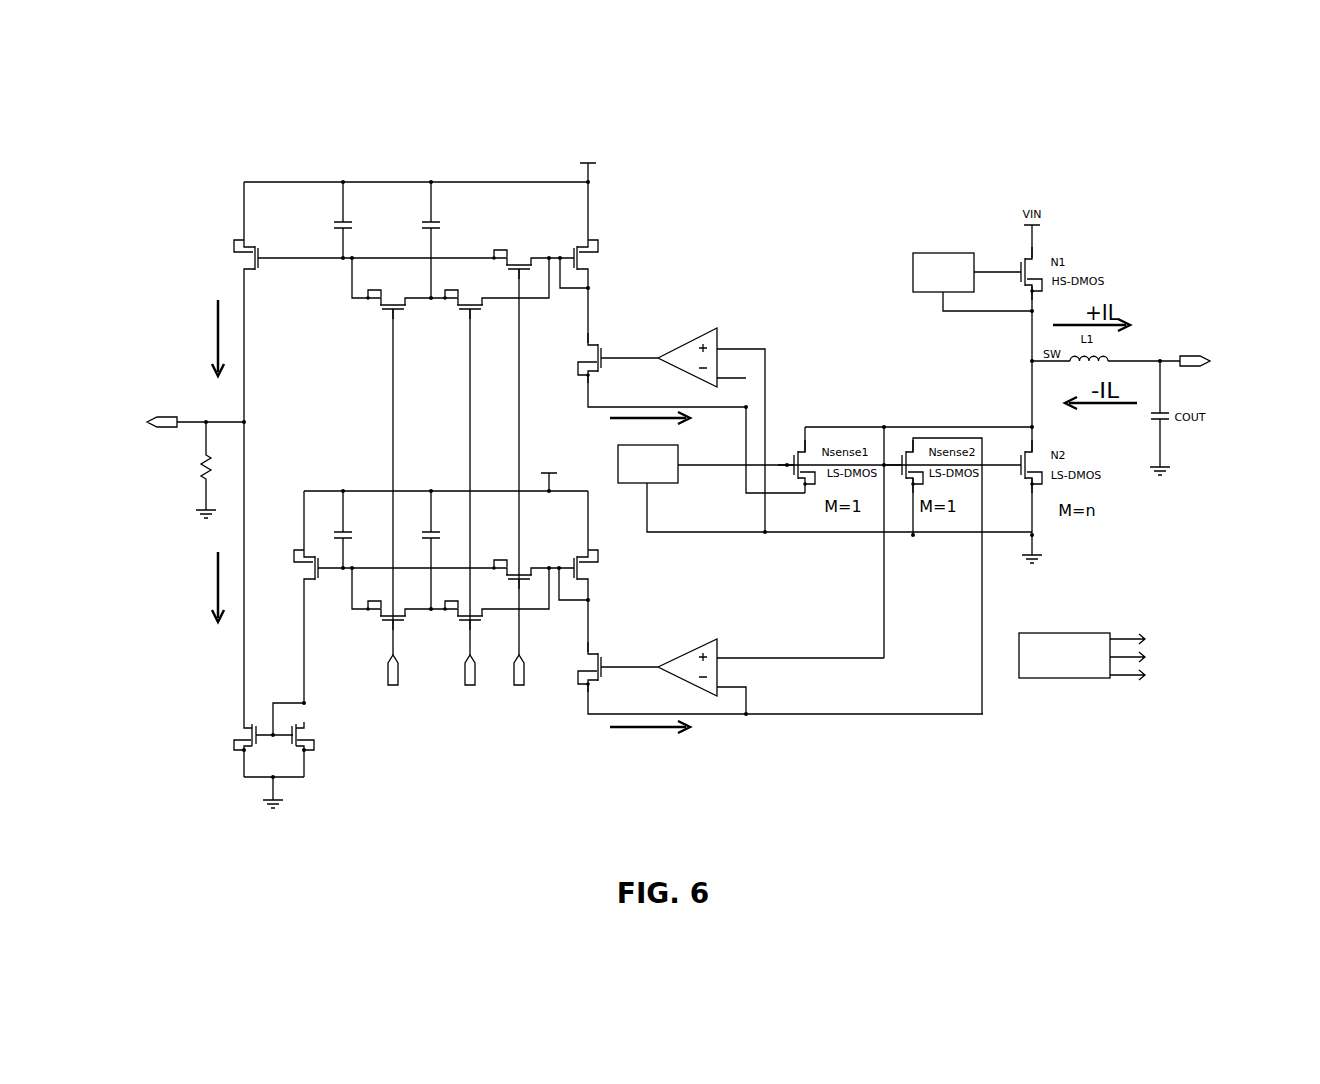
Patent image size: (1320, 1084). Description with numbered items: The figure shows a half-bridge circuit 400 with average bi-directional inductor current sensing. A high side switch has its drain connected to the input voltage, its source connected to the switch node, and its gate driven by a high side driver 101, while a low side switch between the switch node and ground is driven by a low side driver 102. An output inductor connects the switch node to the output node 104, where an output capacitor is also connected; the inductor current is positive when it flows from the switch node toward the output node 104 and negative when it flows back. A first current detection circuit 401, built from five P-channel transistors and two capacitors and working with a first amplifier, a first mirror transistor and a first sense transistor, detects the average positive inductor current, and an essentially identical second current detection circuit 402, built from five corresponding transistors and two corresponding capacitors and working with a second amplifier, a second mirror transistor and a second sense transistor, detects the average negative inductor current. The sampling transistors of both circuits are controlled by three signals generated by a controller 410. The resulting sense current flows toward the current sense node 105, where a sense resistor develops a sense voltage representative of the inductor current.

The half-bridge circuit 400 is at (202, 167).
The current detection circuit 401 is at (659, 228).
The current detection circuit 402 is at (649, 609).
The high side driver 101 is at (913, 272).
The low side driver 102 is at (618, 448).
The output node 104 is at (1196, 358).
The current sense node 105 is at (158, 420).
The controller 410 is at (1050, 669).